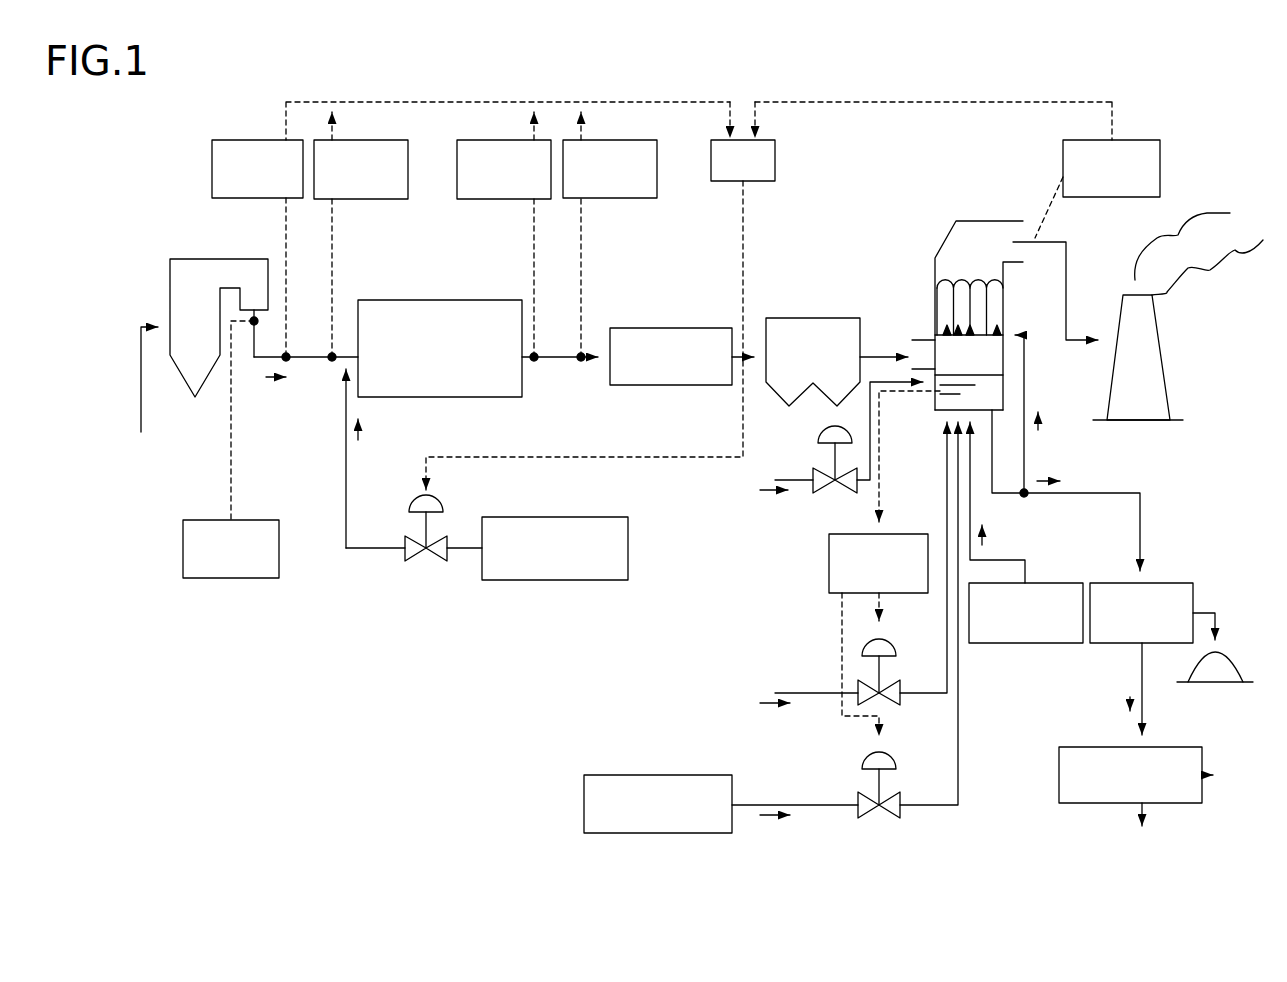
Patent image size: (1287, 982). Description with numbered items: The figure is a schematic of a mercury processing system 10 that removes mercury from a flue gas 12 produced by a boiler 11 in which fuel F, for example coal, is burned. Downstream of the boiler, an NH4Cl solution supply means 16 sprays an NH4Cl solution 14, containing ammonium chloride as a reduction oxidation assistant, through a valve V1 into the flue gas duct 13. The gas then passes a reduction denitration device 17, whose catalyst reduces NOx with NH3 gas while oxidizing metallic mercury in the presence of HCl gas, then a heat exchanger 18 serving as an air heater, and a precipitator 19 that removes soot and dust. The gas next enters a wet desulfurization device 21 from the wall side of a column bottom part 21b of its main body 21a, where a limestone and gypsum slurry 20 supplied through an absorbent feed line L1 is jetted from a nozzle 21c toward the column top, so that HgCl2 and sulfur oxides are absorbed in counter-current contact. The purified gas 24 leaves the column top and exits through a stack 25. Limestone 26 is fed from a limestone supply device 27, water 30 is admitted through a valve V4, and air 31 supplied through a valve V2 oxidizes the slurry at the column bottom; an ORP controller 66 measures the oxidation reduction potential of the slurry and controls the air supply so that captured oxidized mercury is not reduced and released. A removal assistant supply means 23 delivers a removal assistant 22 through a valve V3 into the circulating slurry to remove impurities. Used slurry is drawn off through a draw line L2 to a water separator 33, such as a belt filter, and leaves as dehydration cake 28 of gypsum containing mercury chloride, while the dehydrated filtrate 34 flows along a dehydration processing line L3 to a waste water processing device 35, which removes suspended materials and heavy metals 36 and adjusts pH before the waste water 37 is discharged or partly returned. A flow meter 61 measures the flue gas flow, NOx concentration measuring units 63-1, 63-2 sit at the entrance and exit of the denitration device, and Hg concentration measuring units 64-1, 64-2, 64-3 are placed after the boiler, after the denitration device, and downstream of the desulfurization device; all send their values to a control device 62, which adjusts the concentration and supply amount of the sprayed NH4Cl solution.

The mercury processing system 10 is at (660, 91).
The boiler 11 is at (228, 234).
The flue gas 12 is at (277, 386).
The flue gas duct 13 is at (254, 358).
The NH4Cl solution 14 is at (362, 422).
The NH4Cl solution supply means 16 is at (563, 517).
The reduction denitration device 17 is at (463, 300).
The heat exchanger 18 is at (692, 328).
The precipitator 19 is at (832, 318).
The limestone and gypsum slurry 20 is at (996, 398).
The wet desulfurization device 21 is at (993, 332).
The main body of the device 21a is at (1005, 293).
The column bottom part 21b is at (930, 408).
The nozzle 21c is at (1005, 330).
The removal assistant 22 is at (775, 823).
The removal assistant supply means 23 is at (690, 775).
The purified gas 24 is at (1084, 337).
The stack 25 is at (1160, 343).
The limestone 26 is at (985, 535).
The limestone supply device 27 is at (1052, 583).
The dehydration cake 28 is at (1228, 660).
The water 30 is at (773, 497).
The air 31 is at (775, 712).
The water separator 33 is at (1160, 583).
The dehydrated filtrate 34 is at (1128, 708).
The waste water processing device 35 is at (1155, 747).
The heavy metals 36 is at (1226, 779).
The waste water 37 is at (1147, 825).
The flow meter 61 is at (253, 520).
The control device 62 is at (770, 140).
The NOx concentration measuring unit 63-1 is at (358, 140).
The NOx concentration measuring unit 63-2 is at (514, 140).
The Hg concentration measuring unit 64-1 is at (262, 140).
The Hg concentration measuring unit 64-2 is at (603, 140).
The Hg concentration measuring unit 64-3 is at (1160, 165).
The ORP controller 66 is at (829, 570).
The valve V1 is at (442, 500).
The valve V2 is at (897, 645).
The valve V3 is at (897, 758).
The valve V4 is at (818, 437).
The absorbent feed line L1 is at (1027, 348).
The draw line L2 is at (1086, 490).
The dehydration processing line L3 is at (1138, 662).
The fuel F is at (141, 377).